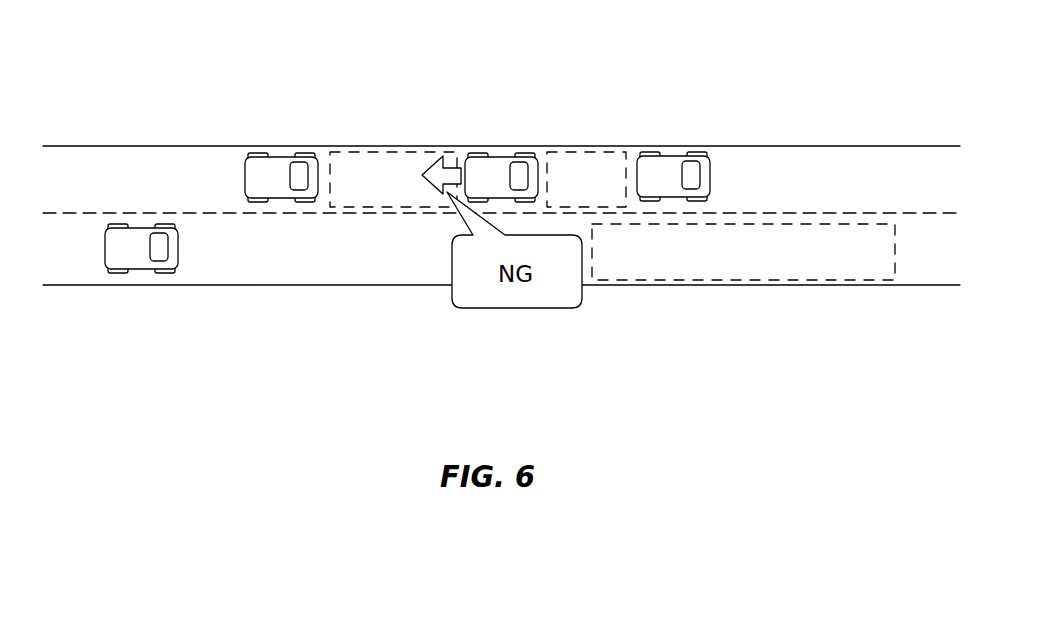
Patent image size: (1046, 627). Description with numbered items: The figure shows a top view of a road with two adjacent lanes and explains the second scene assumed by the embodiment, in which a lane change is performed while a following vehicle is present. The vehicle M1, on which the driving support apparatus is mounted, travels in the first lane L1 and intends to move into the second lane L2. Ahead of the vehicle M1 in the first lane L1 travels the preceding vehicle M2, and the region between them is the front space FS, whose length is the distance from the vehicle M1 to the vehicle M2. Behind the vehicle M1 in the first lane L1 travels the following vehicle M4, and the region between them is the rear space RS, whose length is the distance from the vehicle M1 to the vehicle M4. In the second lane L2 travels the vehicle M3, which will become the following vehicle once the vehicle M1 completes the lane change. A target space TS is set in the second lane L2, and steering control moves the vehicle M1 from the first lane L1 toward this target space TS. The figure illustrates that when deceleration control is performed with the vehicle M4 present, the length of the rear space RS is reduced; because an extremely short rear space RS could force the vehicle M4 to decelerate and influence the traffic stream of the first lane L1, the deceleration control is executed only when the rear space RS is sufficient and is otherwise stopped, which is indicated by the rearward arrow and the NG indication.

The first lane L1 is at (78, 158).
The second lane L2 is at (86, 271).
The vehicle M1 is at (502, 153).
The vehicle M2 is at (670, 157).
The vehicle M3 is at (148, 268).
The vehicle M4 is at (280, 154).
The rear space RS is at (355, 148).
The front space FS is at (580, 148).
The target space TS is at (815, 218).